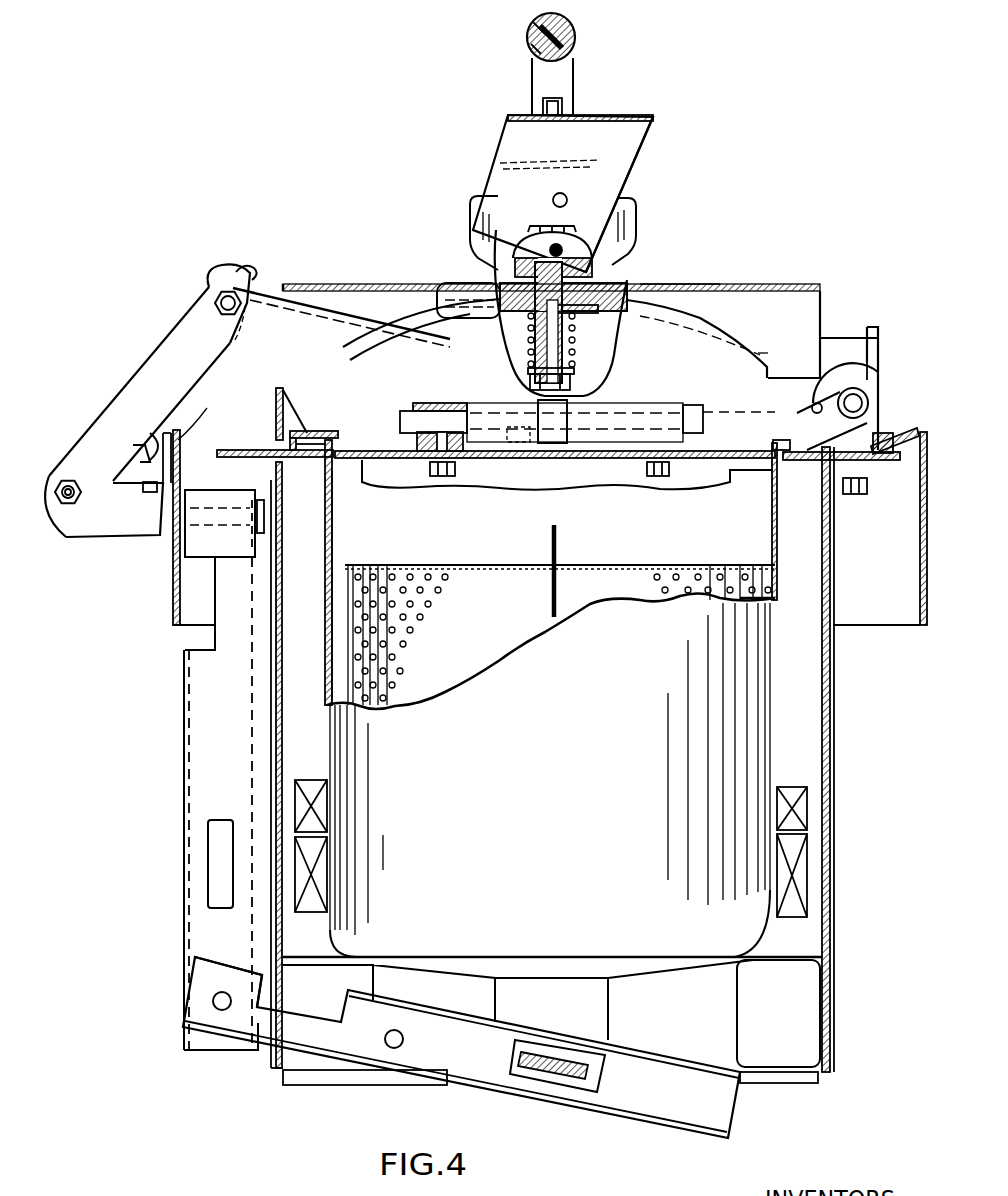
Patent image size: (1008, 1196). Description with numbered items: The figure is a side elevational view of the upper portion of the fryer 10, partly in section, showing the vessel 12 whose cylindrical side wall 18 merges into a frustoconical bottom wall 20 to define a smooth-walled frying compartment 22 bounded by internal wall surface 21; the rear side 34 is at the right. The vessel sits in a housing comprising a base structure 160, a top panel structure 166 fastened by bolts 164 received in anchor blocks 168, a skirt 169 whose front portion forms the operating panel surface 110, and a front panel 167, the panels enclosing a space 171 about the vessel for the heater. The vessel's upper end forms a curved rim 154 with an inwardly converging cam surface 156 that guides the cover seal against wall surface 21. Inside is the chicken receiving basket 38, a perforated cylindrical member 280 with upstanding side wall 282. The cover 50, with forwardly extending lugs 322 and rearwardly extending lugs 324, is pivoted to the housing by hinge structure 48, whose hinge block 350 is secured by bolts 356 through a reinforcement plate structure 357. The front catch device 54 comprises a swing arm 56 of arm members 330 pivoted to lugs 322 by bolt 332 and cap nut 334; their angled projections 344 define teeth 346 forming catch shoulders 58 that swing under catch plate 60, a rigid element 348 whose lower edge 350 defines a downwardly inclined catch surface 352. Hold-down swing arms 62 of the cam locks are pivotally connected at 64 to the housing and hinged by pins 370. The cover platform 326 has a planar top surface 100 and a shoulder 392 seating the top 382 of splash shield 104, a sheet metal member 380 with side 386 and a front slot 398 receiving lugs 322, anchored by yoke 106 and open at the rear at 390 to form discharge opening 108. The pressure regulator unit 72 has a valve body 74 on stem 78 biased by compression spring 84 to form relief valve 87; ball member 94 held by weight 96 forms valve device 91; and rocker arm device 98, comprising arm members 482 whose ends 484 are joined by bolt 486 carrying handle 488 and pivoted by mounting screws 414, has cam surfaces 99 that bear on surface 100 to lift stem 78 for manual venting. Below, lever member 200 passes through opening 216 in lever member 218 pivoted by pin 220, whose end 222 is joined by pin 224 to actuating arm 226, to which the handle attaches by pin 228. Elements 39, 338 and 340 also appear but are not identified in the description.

The fryer 10 is at (822, 147).
The vessel 12 is at (316, 667).
The cylindrical side wall 18 is at (328, 572).
The frustoconical bottom wall 20 is at (651, 963).
The internal wall surface 21 is at (334, 500).
The cooking or frying compartment 22 is at (377, 538).
The rear side 34 is at (906, 316).
The chicken receiving basket 38 is at (673, 563).
The rod 39 is at (561, 546).
The hinge structure 48 is at (871, 325).
The cover 50 is at (674, 326).
The catch device 54 is at (212, 272).
The swing arm 56 is at (116, 414).
The catch shoulders 58 is at (124, 539).
The catch plate 60 is at (132, 450).
The hold down swing arms 62 is at (554, 443).
The pivot connection 64 is at (576, 401).
The pressure regulator unit 72 is at (612, 140).
The valve body structure 74 is at (657, 116).
The stem 78 is at (534, 330).
The compression spring 84 is at (530, 346).
The relief valve 87 is at (548, 309).
The valve device 91 is at (574, 244).
The ball member 94 is at (514, 264).
The weight 96 is at (577, 236).
The rocker arm device 98 is at (578, 34).
The cam surfaces 99 is at (640, 216).
The top surface 100 is at (628, 292).
The splash shield structure 104 is at (377, 283).
The yoke 106 is at (278, 388).
The discharge opening 108 is at (826, 296).
The operating panel surface 110 is at (160, 626).
The curved rim 154 is at (334, 450).
The cam surface 156 is at (322, 446).
The base structure 160 is at (800, 945).
The bolts 164 is at (441, 477).
The top panel structure 166 is at (893, 440).
The front panel 167 is at (283, 763).
The anchor blocks 168 is at (455, 403).
The skirt 169 is at (918, 624).
The space 171 is at (815, 828).
The lever member 200 is at (556, 1050).
The opening 216 is at (580, 1088).
The lever member 218 is at (452, 1016).
The pin 220 is at (396, 1030).
The end 222 is at (194, 1013).
The pin 224 is at (231, 1001).
The actuating arm 226 is at (200, 795).
The pin 228 is at (233, 522).
The cylindrical member 280 is at (726, 564).
The side wall 282 is at (773, 592).
The forwardly extending lugs 322 is at (272, 293).
The rearwardly extending lugs 324 is at (803, 380).
The platform 326 is at (640, 292).
The arm members 330 is at (170, 343).
The bolt 332 is at (232, 291).
The cap nut 334 is at (216, 300).
The pivot 338 is at (60, 478).
The nut 340 is at (66, 506).
The angled projections 344 is at (151, 538).
The tooth 346 is at (190, 487).
The rigid element 348 is at (157, 432).
The hinge block 350 is at (140, 490).
The catch surface 352 is at (170, 440).
The bolts 356 is at (855, 496).
The reinforcement plate structure 357 is at (822, 506).
The pins 370 is at (567, 473).
The sheet metal member 380 is at (448, 283).
The top 382 is at (345, 283).
The side 386 is at (306, 430).
The rear opening 390 is at (878, 338).
The shoulder 392 is at (675, 285).
The slot 398 is at (290, 386).
The mounting screws 414 is at (558, 194).
The arm members 482 is at (575, 82).
The ends 484 is at (574, 60).
The bolt 486 is at (528, 22).
The handle 488 is at (530, 42).